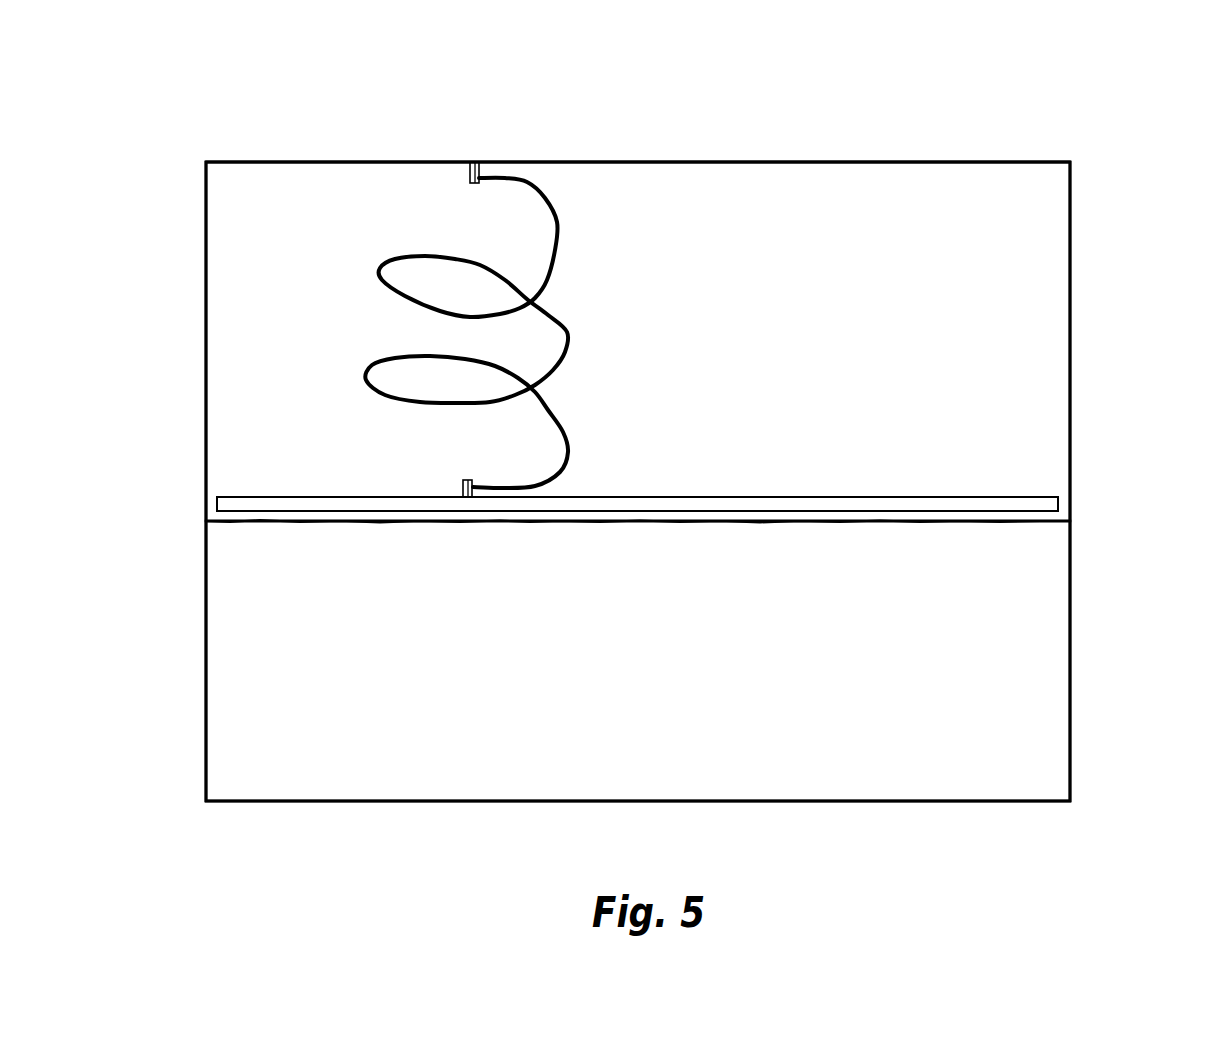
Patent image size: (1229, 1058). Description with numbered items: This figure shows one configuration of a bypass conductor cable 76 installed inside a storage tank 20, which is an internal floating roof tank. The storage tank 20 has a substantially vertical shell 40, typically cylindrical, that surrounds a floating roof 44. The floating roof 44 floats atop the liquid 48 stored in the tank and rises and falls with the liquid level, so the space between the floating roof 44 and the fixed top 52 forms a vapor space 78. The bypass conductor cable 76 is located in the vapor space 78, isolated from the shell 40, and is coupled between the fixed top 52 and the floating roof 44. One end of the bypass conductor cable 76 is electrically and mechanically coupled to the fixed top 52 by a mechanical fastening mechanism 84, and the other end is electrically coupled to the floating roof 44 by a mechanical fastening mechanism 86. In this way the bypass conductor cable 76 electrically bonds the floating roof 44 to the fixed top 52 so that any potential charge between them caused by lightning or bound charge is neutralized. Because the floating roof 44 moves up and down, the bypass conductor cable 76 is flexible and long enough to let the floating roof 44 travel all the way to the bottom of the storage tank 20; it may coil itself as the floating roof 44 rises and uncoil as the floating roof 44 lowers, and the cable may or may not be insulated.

The storage tank 20 is at (1066, 123).
The shell 40 is at (206, 363).
The floating roof 44 is at (690, 507).
The liquid 48 is at (653, 668).
The fixed top 52 is at (637, 161).
The bypass conductor cable 76 is at (568, 347).
The vapor space 78 is at (918, 308).
The mechanical fastening mechanism 84 is at (470, 173).
The mechanical fastening mechanism 86 is at (463, 480).